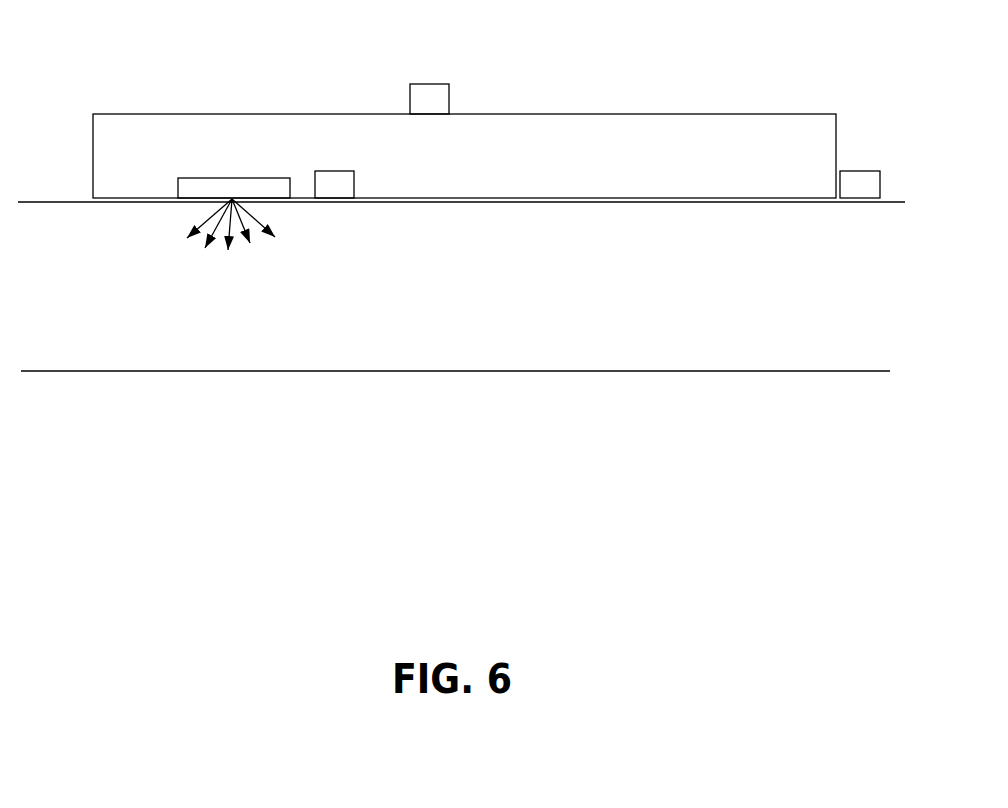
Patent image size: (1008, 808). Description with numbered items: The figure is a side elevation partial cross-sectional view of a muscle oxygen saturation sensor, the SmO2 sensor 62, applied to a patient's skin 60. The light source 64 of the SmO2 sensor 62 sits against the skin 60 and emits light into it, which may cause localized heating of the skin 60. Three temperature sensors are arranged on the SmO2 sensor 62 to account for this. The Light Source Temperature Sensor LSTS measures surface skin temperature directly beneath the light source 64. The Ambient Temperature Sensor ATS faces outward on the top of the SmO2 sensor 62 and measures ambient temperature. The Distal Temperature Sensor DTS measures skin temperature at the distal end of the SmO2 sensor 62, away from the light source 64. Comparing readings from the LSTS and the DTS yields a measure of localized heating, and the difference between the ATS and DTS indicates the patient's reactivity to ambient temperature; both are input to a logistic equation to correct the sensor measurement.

The skin 60 is at (133, 327).
The SmO2 sensor 62 is at (125, 140).
The light source 64 is at (233, 188).
The Light Source Temperature Sensor LSTS is at (333, 185).
The Ambient Temperature Sensor ATS is at (430, 95).
The Distal Temperature Sensor DTS is at (863, 180).